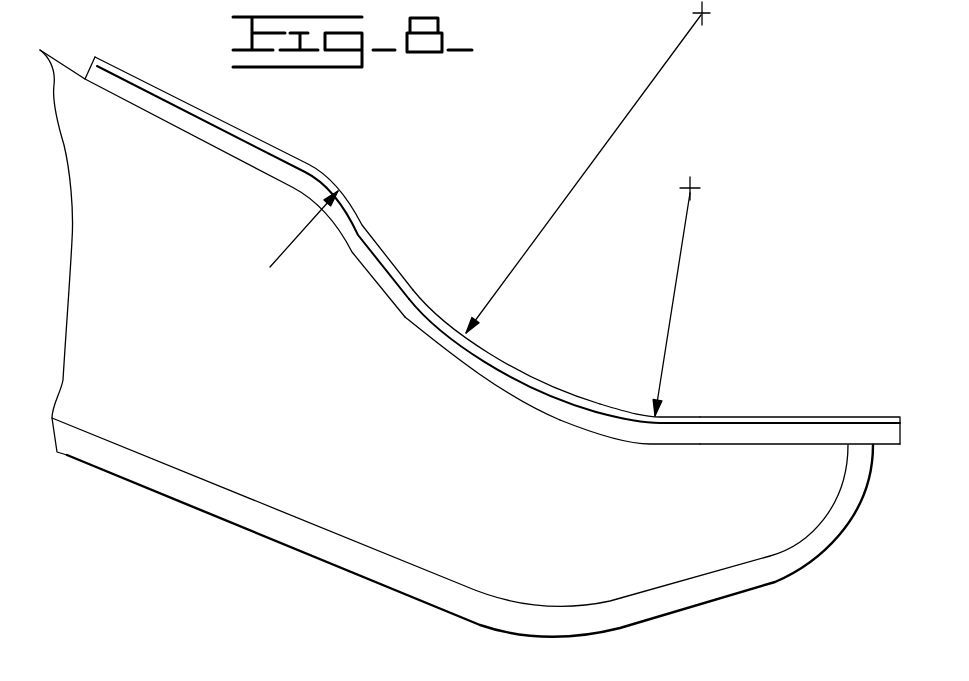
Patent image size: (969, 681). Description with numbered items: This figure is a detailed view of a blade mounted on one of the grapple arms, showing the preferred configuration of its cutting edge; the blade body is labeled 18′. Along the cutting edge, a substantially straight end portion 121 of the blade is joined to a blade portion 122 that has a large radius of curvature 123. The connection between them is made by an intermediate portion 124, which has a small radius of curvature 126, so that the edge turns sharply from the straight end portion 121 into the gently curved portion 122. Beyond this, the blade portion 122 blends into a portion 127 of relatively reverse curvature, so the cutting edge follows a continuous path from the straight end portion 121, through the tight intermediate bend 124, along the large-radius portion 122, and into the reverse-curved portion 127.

The base member 18′ is at (224, 371).
The substantially straight end portion 121 is at (797, 415).
The blade portion having a large radius of curvature 122 is at (427, 290).
The large radius of curvature 123 is at (603, 143).
The intermediate portion 124 is at (680, 417).
The small radius of curvature 126 is at (683, 252).
The portion of relatively reverse curvature 127 is at (366, 168).